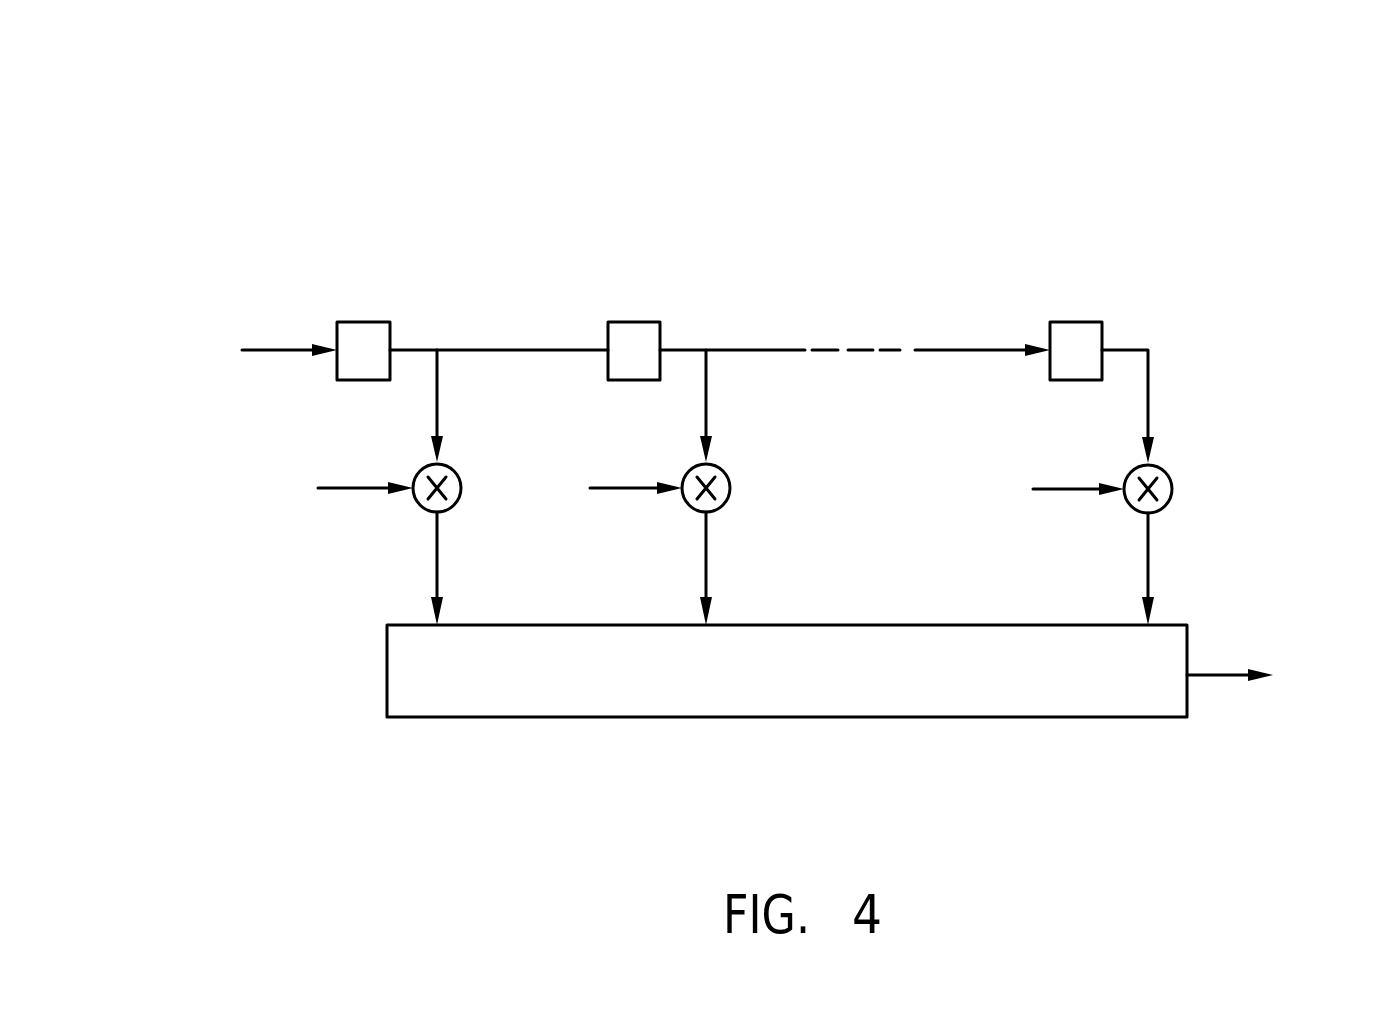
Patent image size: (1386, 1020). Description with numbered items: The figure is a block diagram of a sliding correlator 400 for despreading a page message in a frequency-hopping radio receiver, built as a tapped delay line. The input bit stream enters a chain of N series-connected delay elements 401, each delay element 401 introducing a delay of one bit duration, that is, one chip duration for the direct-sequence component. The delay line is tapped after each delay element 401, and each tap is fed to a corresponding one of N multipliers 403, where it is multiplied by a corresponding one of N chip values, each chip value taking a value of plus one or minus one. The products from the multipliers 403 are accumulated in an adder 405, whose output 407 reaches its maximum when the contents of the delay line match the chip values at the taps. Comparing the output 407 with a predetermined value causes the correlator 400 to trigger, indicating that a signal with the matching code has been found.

The sliding correlator 400 is at (366, 128).
The delay element 401 is at (365, 322).
The multiplier 403 is at (457, 468).
The adder 405 is at (790, 625).
The output 407 is at (1205, 675).